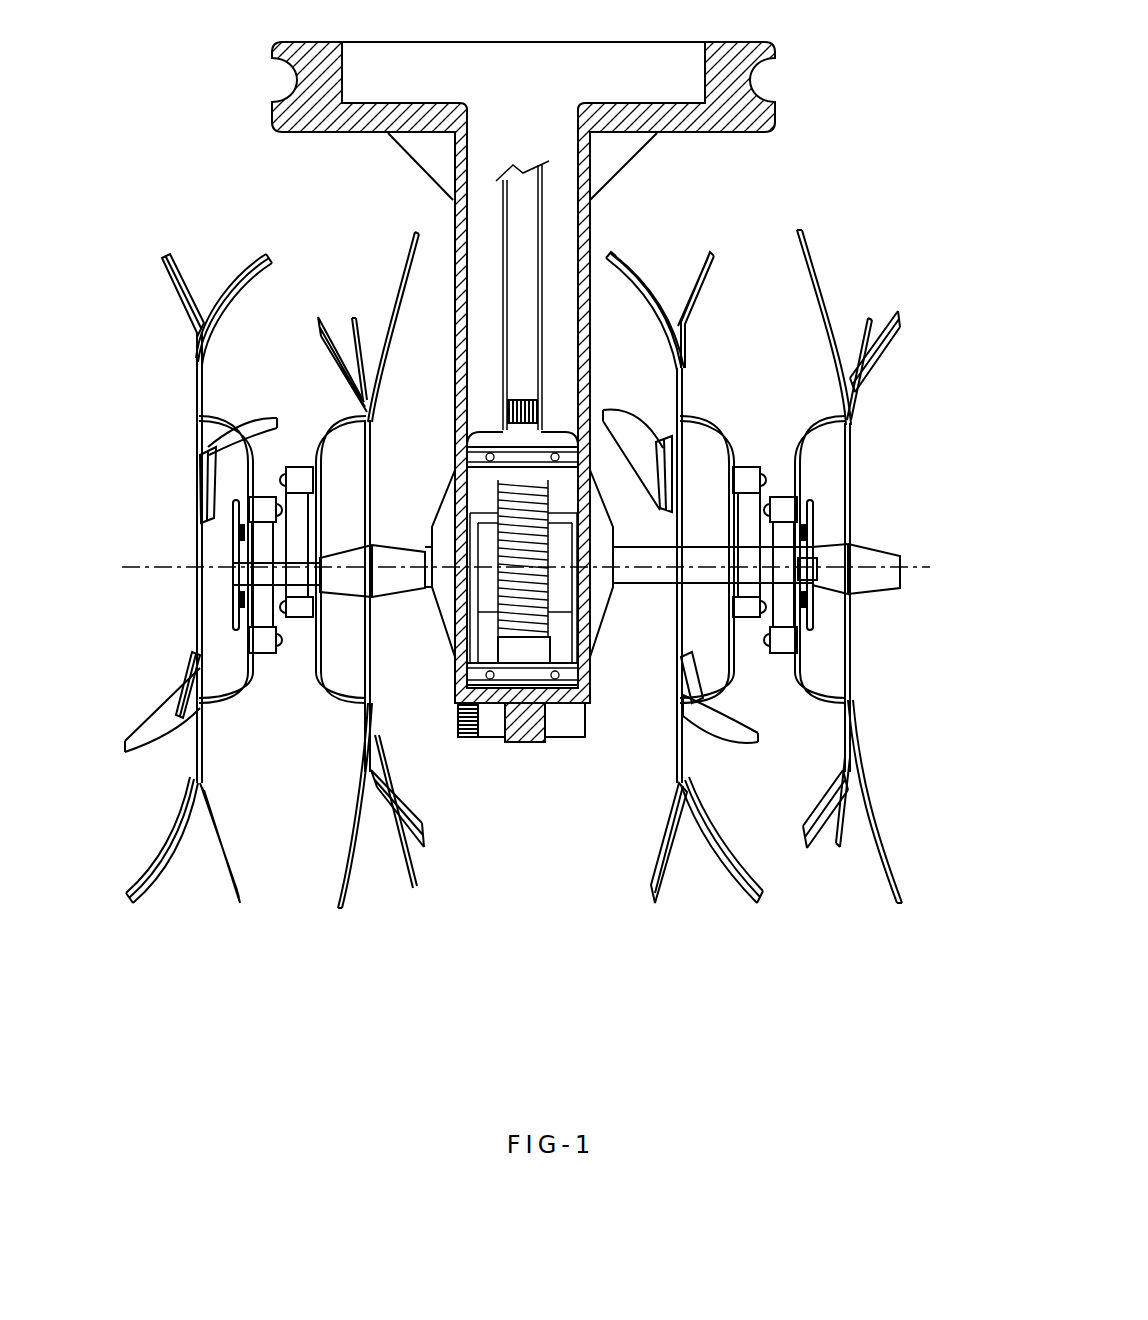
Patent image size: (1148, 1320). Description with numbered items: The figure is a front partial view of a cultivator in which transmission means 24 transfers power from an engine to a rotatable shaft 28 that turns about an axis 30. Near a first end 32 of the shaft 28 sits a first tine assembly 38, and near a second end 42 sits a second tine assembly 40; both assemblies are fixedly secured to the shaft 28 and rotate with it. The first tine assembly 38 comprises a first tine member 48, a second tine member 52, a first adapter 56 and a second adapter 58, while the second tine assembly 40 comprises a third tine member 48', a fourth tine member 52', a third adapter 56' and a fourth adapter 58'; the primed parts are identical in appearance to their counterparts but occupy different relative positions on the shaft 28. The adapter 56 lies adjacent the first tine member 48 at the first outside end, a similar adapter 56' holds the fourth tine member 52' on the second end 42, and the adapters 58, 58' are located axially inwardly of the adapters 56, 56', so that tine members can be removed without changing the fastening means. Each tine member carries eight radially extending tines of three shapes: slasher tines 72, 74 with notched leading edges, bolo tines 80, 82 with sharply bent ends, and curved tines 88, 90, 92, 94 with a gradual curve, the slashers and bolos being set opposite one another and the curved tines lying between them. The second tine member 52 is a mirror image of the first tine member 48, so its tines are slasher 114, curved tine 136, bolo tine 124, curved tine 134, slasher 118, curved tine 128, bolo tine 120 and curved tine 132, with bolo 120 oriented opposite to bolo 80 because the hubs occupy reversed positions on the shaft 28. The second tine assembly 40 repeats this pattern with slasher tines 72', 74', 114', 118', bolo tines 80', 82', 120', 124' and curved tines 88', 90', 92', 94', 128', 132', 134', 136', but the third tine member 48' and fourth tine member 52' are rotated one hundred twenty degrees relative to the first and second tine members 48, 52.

The transmission means 24 is at (558, 648).
The shaft 28 is at (612, 550).
The axis 30 is at (912, 565).
The first end 32 is at (773, 520).
The first tine assembly 38 is at (769, 622).
The second tine assembly 40 is at (284, 614).
The second end 42 is at (266, 557).
The first tine member 48 is at (820, 593).
The second tine member 52 is at (677, 544).
The first adapter 56 is at (811, 687).
The second adapter 58 is at (724, 662).
The slasher tine 72 is at (845, 827).
The slasher tine 74 is at (875, 349).
The bolo tine 80 is at (900, 351).
The bolo tine 82 is at (786, 809).
The curved tine 88 is at (753, 601).
The curved tine 90 is at (833, 326).
The curved tine 92 is at (866, 546).
The curved tine 94 is at (888, 801).
The slasher tine 114 is at (658, 675).
The slasher tine 118 is at (635, 474).
The bolo tine 120 is at (632, 843).
The bolo tine 124 is at (720, 287).
The curved tine 128 is at (720, 734).
The curved tine 132 is at (739, 840).
The curved tine 134 is at (645, 294).
The curved tine 136 is at (633, 441).
The third tine member 48' is at (334, 593).
The fourth tine member 52' is at (226, 580).
The third adapter 56' is at (245, 682).
The fourth adapter 58' is at (325, 676).
The slasher tine 72' is at (359, 317).
The slasher tine 74' is at (412, 820).
The bolo tine 80' is at (427, 808).
The bolo tine 82' is at (344, 344).
The curved tine 88' is at (329, 533).
The curved tine 90' is at (369, 827).
The curved tine 92' is at (407, 601).
The curved tine 94' is at (390, 306).
The slasher tine 114' is at (170, 485).
The slasher tine 118' is at (152, 672).
The bolo tine 120' is at (198, 278).
The bolo tine 124' is at (250, 843).
The curved tine 128' is at (250, 415).
The curved tine 132' is at (253, 309).
The curved tine 134' is at (141, 869).
The curved tine 136' is at (145, 734).